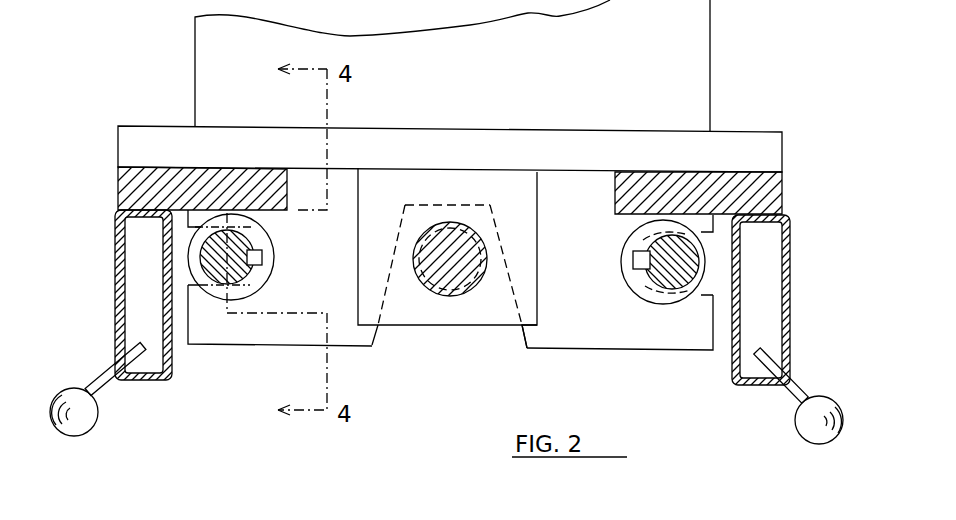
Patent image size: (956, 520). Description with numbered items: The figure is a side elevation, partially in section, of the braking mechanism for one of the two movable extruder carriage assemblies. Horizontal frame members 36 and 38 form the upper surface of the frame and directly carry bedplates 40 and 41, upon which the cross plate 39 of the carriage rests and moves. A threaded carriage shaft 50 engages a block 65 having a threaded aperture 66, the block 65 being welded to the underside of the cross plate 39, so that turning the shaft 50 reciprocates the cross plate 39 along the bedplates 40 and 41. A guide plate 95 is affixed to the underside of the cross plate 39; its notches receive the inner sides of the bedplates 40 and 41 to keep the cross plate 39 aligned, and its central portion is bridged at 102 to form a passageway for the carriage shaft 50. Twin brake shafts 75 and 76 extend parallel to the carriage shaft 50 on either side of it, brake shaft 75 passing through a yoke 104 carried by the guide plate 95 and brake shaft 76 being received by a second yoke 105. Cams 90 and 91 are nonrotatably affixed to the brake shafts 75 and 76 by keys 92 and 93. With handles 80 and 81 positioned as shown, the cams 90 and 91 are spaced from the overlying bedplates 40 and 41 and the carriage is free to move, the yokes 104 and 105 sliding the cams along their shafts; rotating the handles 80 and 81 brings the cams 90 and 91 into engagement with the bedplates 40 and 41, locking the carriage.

The horizontal frame member 36 is at (117, 230).
The horizontal frame member 38 is at (786, 263).
The cross plate 39 is at (707, 146).
The bedplate 40 is at (153, 185).
The bedplate 41 is at (770, 192).
The shaft 50 is at (455, 279).
The block 65 is at (520, 208).
The threaded aperture 66 is at (463, 233).
The brake shaft 75 is at (233, 273).
The brake shaft 76 is at (670, 275).
The handle 80 is at (76, 405).
The handle 81 is at (812, 415).
The cam 90 is at (262, 275).
The cam 91 is at (632, 280).
The key 92 is at (257, 258).
The key 93 is at (636, 258).
The guide plate 95 is at (565, 333).
The bridged central portion 102 is at (405, 227).
The yoke 104 is at (205, 332).
The yoke 105 is at (696, 326).